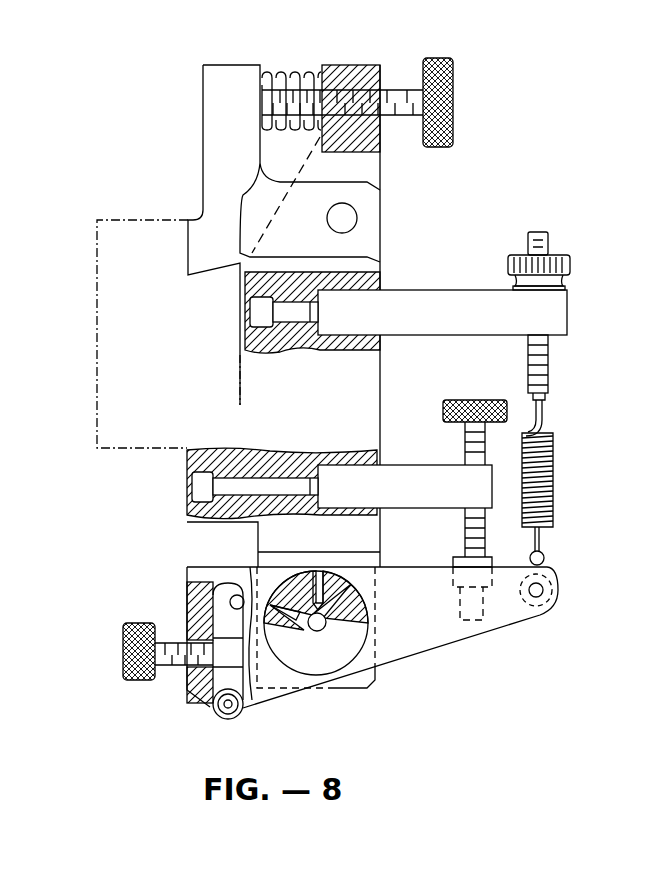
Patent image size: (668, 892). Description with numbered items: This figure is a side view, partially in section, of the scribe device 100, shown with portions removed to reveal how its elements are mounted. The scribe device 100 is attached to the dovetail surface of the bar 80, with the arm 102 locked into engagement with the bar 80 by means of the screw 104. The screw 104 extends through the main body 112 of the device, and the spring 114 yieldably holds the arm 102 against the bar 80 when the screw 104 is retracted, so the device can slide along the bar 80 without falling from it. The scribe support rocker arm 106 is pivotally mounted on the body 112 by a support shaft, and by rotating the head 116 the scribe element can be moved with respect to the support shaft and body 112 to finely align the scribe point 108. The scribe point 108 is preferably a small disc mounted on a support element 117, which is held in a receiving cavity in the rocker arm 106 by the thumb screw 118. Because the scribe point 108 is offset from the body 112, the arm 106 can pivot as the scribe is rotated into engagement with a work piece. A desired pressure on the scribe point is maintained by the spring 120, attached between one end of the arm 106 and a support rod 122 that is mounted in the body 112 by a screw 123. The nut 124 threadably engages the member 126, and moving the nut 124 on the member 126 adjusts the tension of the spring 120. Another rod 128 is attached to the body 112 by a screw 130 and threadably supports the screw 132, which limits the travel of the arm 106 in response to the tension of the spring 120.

The bar 80 is at (112, 254).
The scribe device 100 is at (486, 200).
The arm 102 is at (215, 136).
The screw 104 is at (453, 93).
The scribe support rocker arm 106 is at (432, 632).
The scribe point 108 is at (228, 720).
The main body 112 is at (380, 172).
The spring 114 is at (280, 78).
The head 116 is at (345, 658).
The support element 117 is at (218, 608).
The thumb screw 118 is at (137, 680).
The spring 120 is at (553, 493).
The support rod 122 is at (427, 303).
The screw 123 is at (250, 318).
The nut 124 is at (568, 260).
The member 126 is at (548, 378).
The rod 128 is at (418, 470).
The screw 130 is at (192, 488).
The screw 132 is at (468, 400).